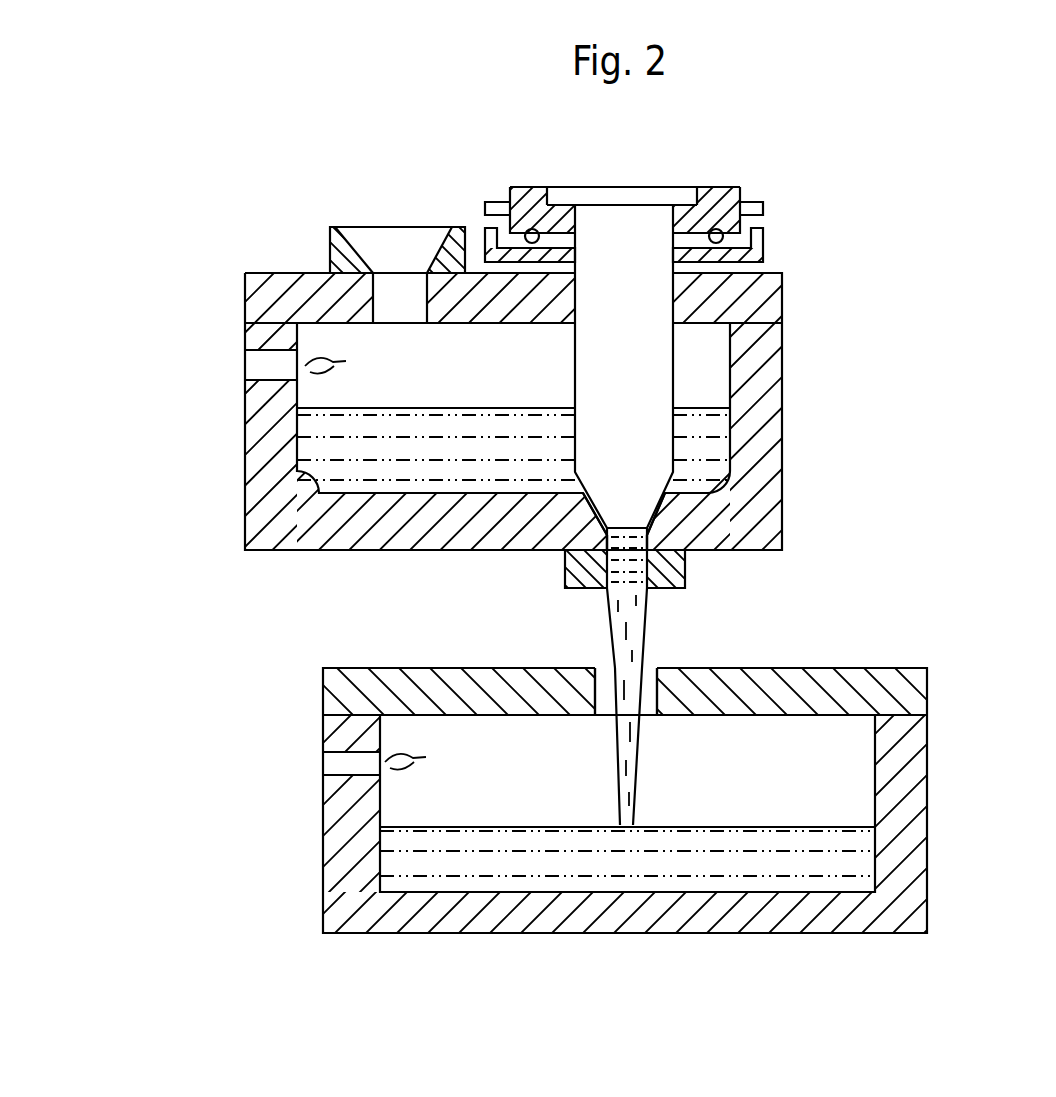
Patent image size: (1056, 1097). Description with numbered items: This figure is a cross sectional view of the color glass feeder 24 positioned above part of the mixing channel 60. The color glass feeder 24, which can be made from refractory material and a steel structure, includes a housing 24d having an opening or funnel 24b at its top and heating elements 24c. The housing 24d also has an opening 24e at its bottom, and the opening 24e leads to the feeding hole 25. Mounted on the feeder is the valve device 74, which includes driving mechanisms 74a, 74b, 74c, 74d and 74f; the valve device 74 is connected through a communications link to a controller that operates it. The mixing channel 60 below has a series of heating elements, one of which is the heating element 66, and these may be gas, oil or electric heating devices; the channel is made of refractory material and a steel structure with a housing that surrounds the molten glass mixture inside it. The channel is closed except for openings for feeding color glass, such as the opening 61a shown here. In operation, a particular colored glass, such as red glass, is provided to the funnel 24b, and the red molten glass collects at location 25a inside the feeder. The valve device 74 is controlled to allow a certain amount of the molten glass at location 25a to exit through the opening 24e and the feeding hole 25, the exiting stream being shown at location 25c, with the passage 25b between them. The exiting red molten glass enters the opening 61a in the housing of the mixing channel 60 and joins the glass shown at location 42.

The color glass feeder 24 is at (587, 377).
The funnel 24b is at (390, 245).
The heating elements 24c is at (257, 368).
The housing 24d is at (773, 388).
The opening 24e is at (555, 549).
The feeding hole 25 is at (728, 542).
The location of red molten glass 25a is at (340, 468).
The nozzle channel 25b is at (640, 547).
The location of exiting red molten glass 25c is at (628, 667).
The valve device 74 is at (609, 313).
The driving mechanism 74a is at (538, 188).
The driving mechanism 74b is at (525, 229).
The driving mechanism 74c is at (493, 242).
The driving mechanism 74d is at (723, 233).
The driving mechanism 74f is at (600, 378).
The mixing channel 60 is at (607, 734).
The opening 61a is at (600, 685).
The heating element 66 is at (343, 765).
The location of red molten glass in mixing channel 42 is at (765, 838).